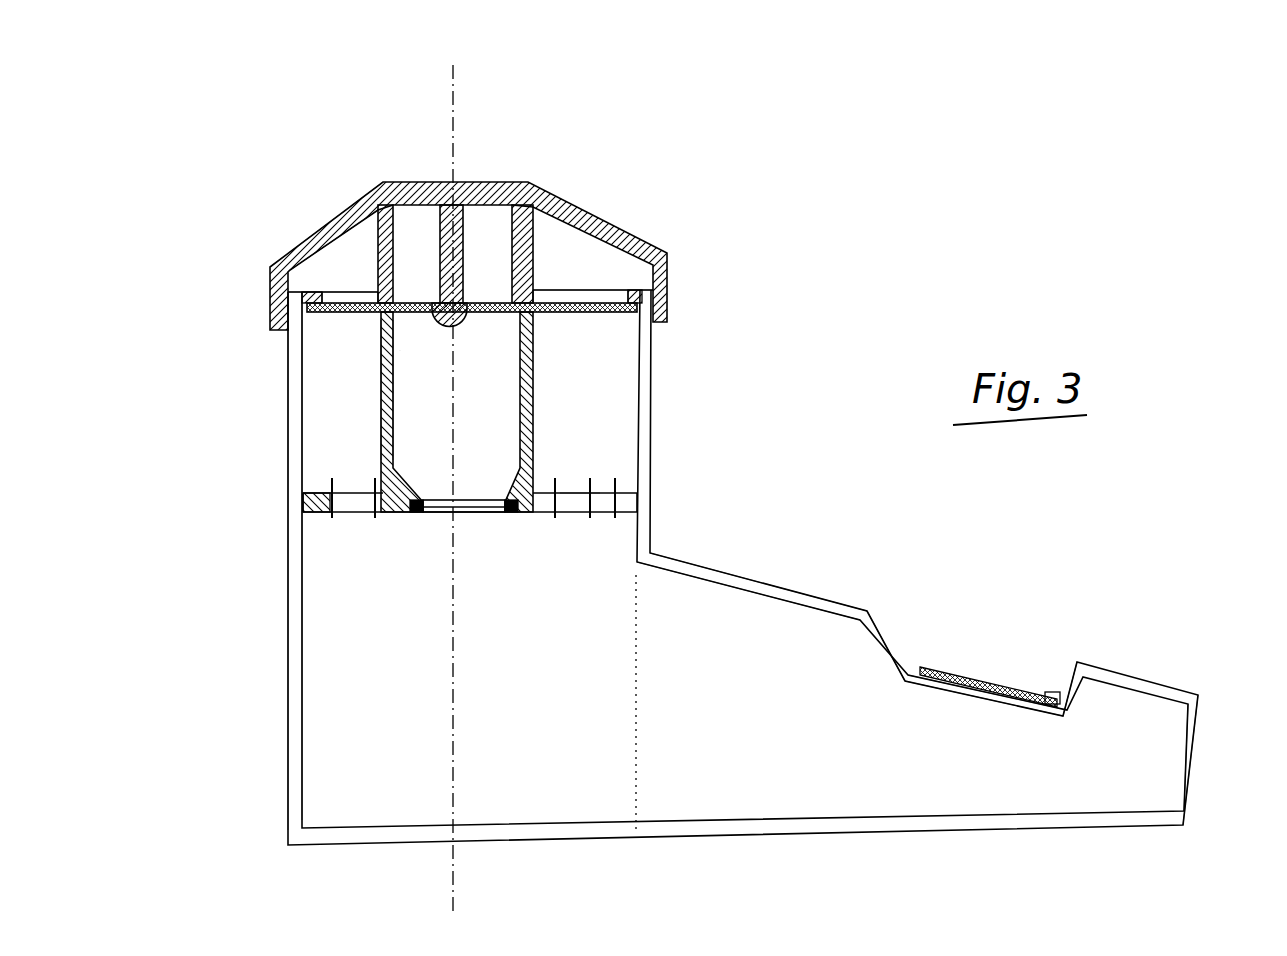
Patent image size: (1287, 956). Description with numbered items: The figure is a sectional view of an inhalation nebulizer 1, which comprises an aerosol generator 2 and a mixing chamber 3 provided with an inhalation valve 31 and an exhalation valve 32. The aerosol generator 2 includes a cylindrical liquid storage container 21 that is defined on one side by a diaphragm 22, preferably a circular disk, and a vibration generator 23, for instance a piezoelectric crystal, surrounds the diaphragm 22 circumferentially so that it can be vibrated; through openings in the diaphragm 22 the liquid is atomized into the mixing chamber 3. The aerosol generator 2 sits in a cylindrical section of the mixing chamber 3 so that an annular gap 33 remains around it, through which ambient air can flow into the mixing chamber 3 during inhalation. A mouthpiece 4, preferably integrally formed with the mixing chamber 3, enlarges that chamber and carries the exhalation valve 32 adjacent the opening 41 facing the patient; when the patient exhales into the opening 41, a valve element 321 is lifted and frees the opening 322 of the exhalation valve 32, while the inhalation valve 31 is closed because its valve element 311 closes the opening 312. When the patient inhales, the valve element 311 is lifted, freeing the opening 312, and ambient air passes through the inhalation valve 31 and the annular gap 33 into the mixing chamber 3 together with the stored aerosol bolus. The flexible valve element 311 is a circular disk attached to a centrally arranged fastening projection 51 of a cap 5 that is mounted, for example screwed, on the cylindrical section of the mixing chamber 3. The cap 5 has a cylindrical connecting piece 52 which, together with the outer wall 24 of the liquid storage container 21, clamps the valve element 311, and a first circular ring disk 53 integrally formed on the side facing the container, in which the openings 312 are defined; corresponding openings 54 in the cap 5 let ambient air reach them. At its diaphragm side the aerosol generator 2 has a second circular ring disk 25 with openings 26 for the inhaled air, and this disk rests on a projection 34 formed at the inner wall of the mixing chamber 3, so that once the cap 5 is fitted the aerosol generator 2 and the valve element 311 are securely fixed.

The inhalation nebulizer 1 is at (228, 601).
The aerosol generator 2 is at (545, 428).
The mixing chamber 3 is at (503, 698).
The mouthpiece 4 is at (783, 573).
The cap 5 is at (518, 182).
The liquid storage container 21 is at (447, 389).
The diaphragm 22 is at (478, 516).
The vibration generator 23 is at (412, 514).
The outer wall 24 is at (383, 388).
The second circular ring disk 25 is at (625, 512).
The openings 26 is at (591, 493).
The inhalation valve 31 is at (677, 297).
The exhalation valve 32 is at (1000, 662).
The annular gap 33 is at (337, 443).
The projection 34 is at (310, 515).
The opening 41 is at (1180, 749).
The fastening projection 51 is at (462, 240).
The cylindrical connecting piece 52 is at (387, 261).
The first circular ring disk 53 is at (542, 291).
The openings 54 is at (327, 230).
The valve element 311 is at (580, 316).
The opening 312 is at (327, 298).
The valve element 321 is at (962, 676).
The opening 322 is at (977, 698).